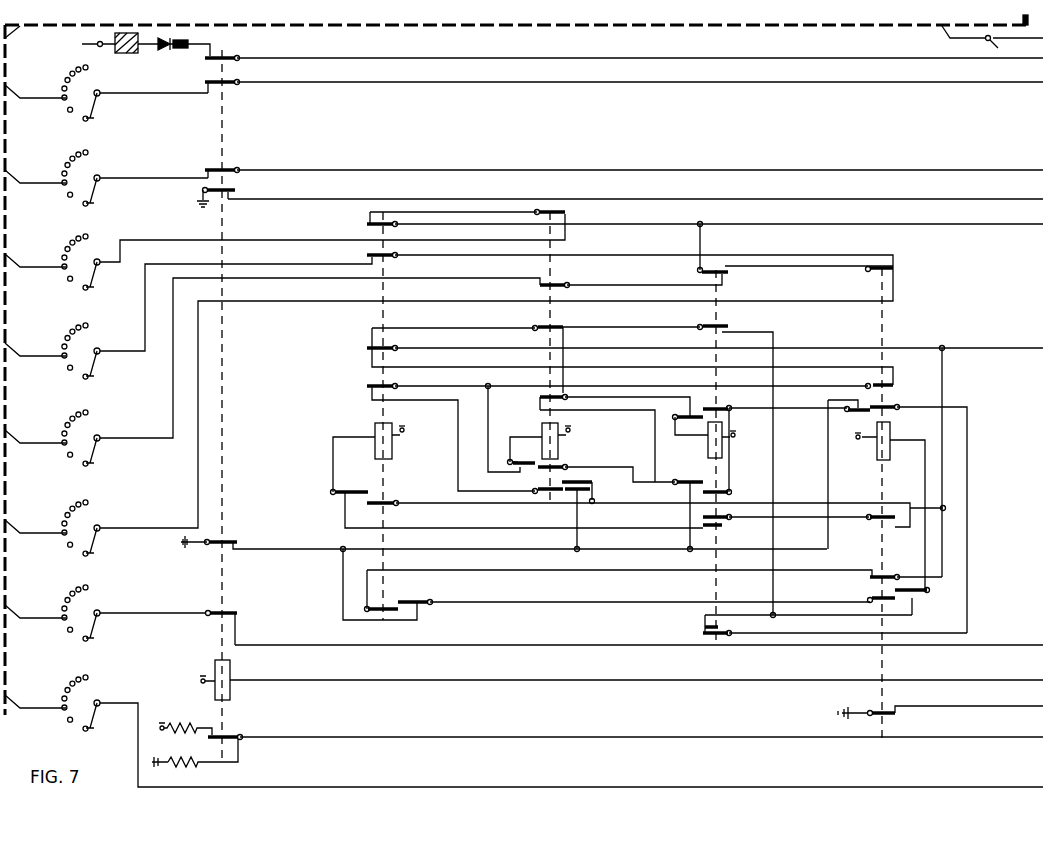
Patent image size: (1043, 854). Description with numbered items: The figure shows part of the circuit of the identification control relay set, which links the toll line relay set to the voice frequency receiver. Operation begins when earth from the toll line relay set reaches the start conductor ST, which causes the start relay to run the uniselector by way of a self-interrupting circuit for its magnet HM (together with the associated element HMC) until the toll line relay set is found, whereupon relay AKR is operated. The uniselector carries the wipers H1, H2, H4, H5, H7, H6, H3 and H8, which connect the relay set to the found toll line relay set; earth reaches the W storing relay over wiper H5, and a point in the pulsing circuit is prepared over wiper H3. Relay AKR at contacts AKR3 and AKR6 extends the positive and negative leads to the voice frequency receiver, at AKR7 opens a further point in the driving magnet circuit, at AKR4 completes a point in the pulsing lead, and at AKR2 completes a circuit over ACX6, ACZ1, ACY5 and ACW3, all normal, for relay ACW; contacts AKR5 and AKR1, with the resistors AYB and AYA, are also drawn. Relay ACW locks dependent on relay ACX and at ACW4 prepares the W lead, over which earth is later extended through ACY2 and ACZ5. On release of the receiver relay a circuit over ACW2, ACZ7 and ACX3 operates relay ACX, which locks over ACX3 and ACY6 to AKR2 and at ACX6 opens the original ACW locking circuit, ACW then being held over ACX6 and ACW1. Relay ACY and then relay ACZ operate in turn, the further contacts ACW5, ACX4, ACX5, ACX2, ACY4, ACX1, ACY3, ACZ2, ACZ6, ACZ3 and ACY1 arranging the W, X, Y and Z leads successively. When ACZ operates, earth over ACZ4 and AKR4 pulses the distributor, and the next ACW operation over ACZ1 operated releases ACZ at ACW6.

The start conductor ST is at (940, 38).
The magnet of uniselector H HM is at (95, 43).
The motor control rectifier HMC is at (184, 50).
The contact AKR7 is at (226, 58).
The contact AKR6 is at (226, 82).
The contact AKR3 is at (228, 170).
The relay AKR contact 5 AKR5 is at (234, 190).
The contact AKR2 is at (234, 542).
The contact AKR4 is at (235, 620).
The relay AKR is at (232, 672).
The relay AKR contact 1 AKR1 is at (235, 737).
The resistor AYB is at (195, 726).
The resistor AYA is at (198, 770).
The wiper H1 is at (106, 87).
The wiper H2 is at (106, 172).
The wiper H4 is at (106, 256).
The wiper H5 is at (106, 345).
The wiper H7 is at (106, 432).
The wiper H6 is at (106, 522).
The wiper H3 is at (106, 607).
The wiper H8 is at (106, 697).
The relay ACW contact 5 ACW5 is at (366, 224).
The relay ACX contact 4 ACX4 is at (566, 214).
The contact ACW4 is at (366, 258).
The relay ACX contact 5 ACX5 is at (568, 282).
The contact ACY2 is at (728, 270).
The contact ACZ5 is at (870, 276).
The relay ACX contact 2 ACX2 is at (545, 325).
The relay ACY contact 4 ACY4 is at (726, 324).
The contact ACW2 is at (396, 348).
The contact ACZ7 is at (866, 386).
The contact ACW1 is at (368, 386).
The relay ACX contact 1 ACX1 is at (540, 400).
The relay ACY contact 3 ACY3 is at (712, 406).
The relay ACZ contact 2 ACZ2 is at (886, 406).
The relay ACW is at (387, 457).
The relay ACX is at (557, 444).
The relay ACY is at (718, 438).
The relay ACZ is at (877, 452).
The contact ACW3 is at (390, 496).
The contact ACX3 is at (540, 489).
The contact ACX6 is at (562, 504).
The contact ACY6 is at (702, 480).
The contact ACY5 is at (714, 524).
The contact ACZ1 is at (878, 520).
The relay ACZ contact 6 ACZ6 is at (870, 570).
The contact ACW6 is at (402, 600).
The relay ACZ contact 3 ACZ3 is at (870, 594).
The relay ACY contact 1 ACY1 is at (700, 634).
The contact ACZ4 is at (888, 708).